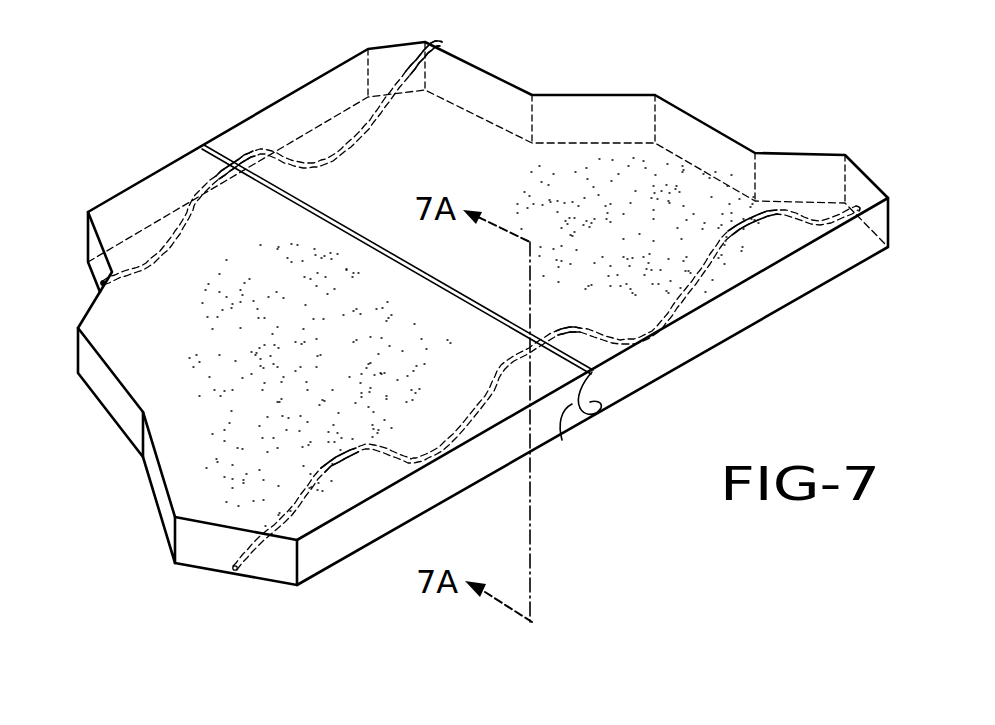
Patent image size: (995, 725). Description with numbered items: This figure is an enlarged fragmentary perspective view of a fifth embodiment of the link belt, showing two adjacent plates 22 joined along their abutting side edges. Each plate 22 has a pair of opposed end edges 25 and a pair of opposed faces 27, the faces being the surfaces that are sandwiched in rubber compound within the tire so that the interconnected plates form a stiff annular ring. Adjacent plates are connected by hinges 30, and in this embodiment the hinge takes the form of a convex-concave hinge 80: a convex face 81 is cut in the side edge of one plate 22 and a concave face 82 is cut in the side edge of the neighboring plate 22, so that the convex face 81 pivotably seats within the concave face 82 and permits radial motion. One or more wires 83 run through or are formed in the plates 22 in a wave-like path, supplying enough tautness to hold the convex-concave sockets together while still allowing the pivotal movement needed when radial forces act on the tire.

The plate 22 is at (565, 95).
The end edge 25 is at (783, 288).
The face 27 is at (217, 480).
The hinge 30 is at (600, 448).
The convex-concave hinge 80 is at (606, 386).
The convex face 81 is at (562, 440).
The concave face 82 is at (605, 405).
The wire 83 is at (323, 158).